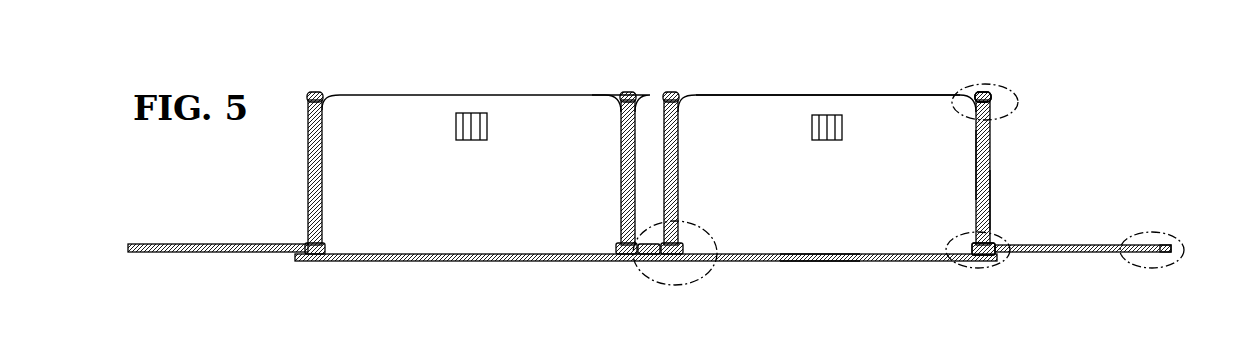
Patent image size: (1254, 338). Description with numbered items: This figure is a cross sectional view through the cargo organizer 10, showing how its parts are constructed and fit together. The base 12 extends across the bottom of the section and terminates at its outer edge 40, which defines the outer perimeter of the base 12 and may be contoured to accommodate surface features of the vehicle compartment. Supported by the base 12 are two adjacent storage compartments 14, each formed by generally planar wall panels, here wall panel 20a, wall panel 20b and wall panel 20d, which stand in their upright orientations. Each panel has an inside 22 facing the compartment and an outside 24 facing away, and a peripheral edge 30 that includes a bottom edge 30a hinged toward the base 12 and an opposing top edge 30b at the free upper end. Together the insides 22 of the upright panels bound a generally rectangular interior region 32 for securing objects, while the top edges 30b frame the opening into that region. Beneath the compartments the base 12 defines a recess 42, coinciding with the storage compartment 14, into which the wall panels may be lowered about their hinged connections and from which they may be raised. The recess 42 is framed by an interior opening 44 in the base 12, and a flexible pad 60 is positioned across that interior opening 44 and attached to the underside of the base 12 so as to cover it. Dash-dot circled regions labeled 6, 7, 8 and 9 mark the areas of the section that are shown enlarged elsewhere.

The cargo organizer 10 is at (303, 74).
The base 12 is at (1084, 242).
The storage compartment 14 is at (707, 91).
The wall panel 20a is at (990, 142).
The wall panel 20b is at (664, 163).
The wall panel 20d is at (742, 118).
The inside 22 is at (976, 163).
The outside 24 is at (990, 195).
The peripheral edge 30 is at (982, 96).
The bottom edge 30a is at (982, 258).
The top edge 30b is at (983, 97).
The interior region 32 is at (844, 208).
The outer edge 40 is at (1171, 248).
The recess 42 is at (810, 229).
The interior opening 44 is at (816, 251).
The pad 60 is at (865, 261).
The detail region of FIG. 6 is at (1017, 87).
The detail region of FIG. 7 is at (1012, 230).
The detail region of FIG. 8 is at (673, 287).
The detail region of FIG. 9 is at (1175, 265).